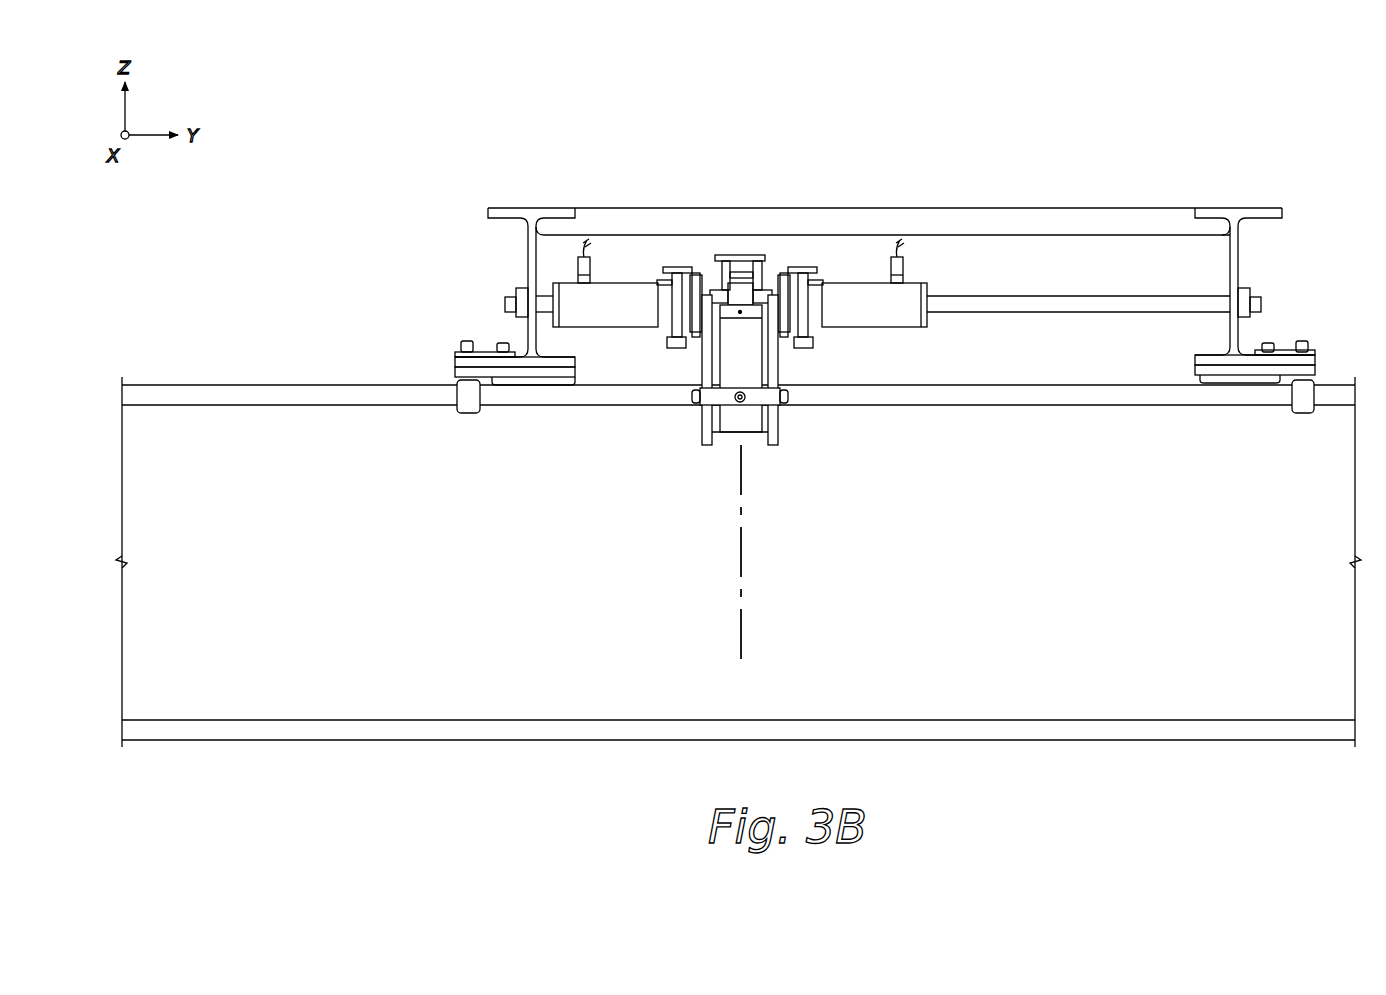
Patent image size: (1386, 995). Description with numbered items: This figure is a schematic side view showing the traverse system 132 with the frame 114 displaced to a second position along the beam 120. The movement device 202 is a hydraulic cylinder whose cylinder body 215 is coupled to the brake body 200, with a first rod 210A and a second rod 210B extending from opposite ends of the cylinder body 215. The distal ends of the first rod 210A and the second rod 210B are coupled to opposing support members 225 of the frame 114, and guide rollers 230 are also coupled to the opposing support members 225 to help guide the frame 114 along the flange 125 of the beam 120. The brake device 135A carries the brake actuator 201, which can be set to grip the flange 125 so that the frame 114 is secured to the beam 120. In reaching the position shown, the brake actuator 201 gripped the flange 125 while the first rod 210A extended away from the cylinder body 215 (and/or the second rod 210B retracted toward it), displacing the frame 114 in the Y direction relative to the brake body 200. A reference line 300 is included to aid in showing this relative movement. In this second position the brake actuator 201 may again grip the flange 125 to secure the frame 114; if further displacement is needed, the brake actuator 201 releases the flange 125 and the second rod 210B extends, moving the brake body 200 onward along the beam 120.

The frame 114 is at (1262, 192).
The beam 120 is at (581, 631).
The flange 125 is at (220, 385).
The traverse system 132 is at (625, 178).
The brake device 135A is at (738, 245).
The brake body 200 is at (798, 460).
The brake actuator 201 is at (736, 352).
The movement device 202 is at (782, 248).
The first rod 210A is at (1180, 315).
The second rod 210B is at (545, 318).
The cylinder body 215 is at (858, 316).
The support members 225 is at (528, 245).
The guide rollers 230 is at (463, 330).
The reference line 300 is at (885, 102).